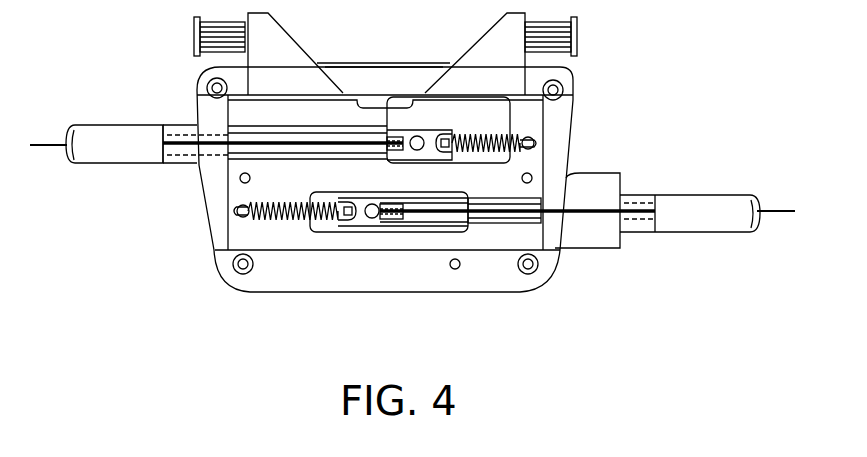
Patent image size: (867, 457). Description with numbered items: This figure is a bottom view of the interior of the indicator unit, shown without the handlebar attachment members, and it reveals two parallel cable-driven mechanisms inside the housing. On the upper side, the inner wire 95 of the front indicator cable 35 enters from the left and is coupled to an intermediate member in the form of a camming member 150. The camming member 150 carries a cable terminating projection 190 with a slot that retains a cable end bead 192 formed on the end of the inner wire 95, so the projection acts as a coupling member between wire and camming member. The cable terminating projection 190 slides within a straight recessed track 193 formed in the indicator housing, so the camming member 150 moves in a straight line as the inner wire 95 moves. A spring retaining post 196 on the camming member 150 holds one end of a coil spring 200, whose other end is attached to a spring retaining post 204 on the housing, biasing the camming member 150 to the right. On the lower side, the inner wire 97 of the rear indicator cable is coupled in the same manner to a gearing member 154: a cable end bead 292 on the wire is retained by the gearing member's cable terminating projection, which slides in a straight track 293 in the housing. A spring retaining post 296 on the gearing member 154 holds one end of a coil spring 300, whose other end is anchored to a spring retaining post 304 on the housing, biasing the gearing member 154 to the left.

The front indicator cable 35 is at (78, 120).
The inner wire 95 is at (177, 135).
The inner wire 97 is at (634, 205).
The camming member 150 is at (450, 107).
The gearing member 154 is at (412, 220).
The cable terminating projection 190 is at (395, 160).
The cable end bead 192 is at (415, 140).
The track 193 is at (300, 125).
The spring retaining post 196 is at (448, 140).
The coil spring 200 is at (486, 153).
The spring retaining post 204 is at (535, 143).
The cable end bead 292 is at (373, 218).
The track 293 is at (517, 223).
The spring retaining post 296 is at (338, 196).
The coil spring 300 is at (290, 228).
The spring retaining post 304 is at (236, 211).